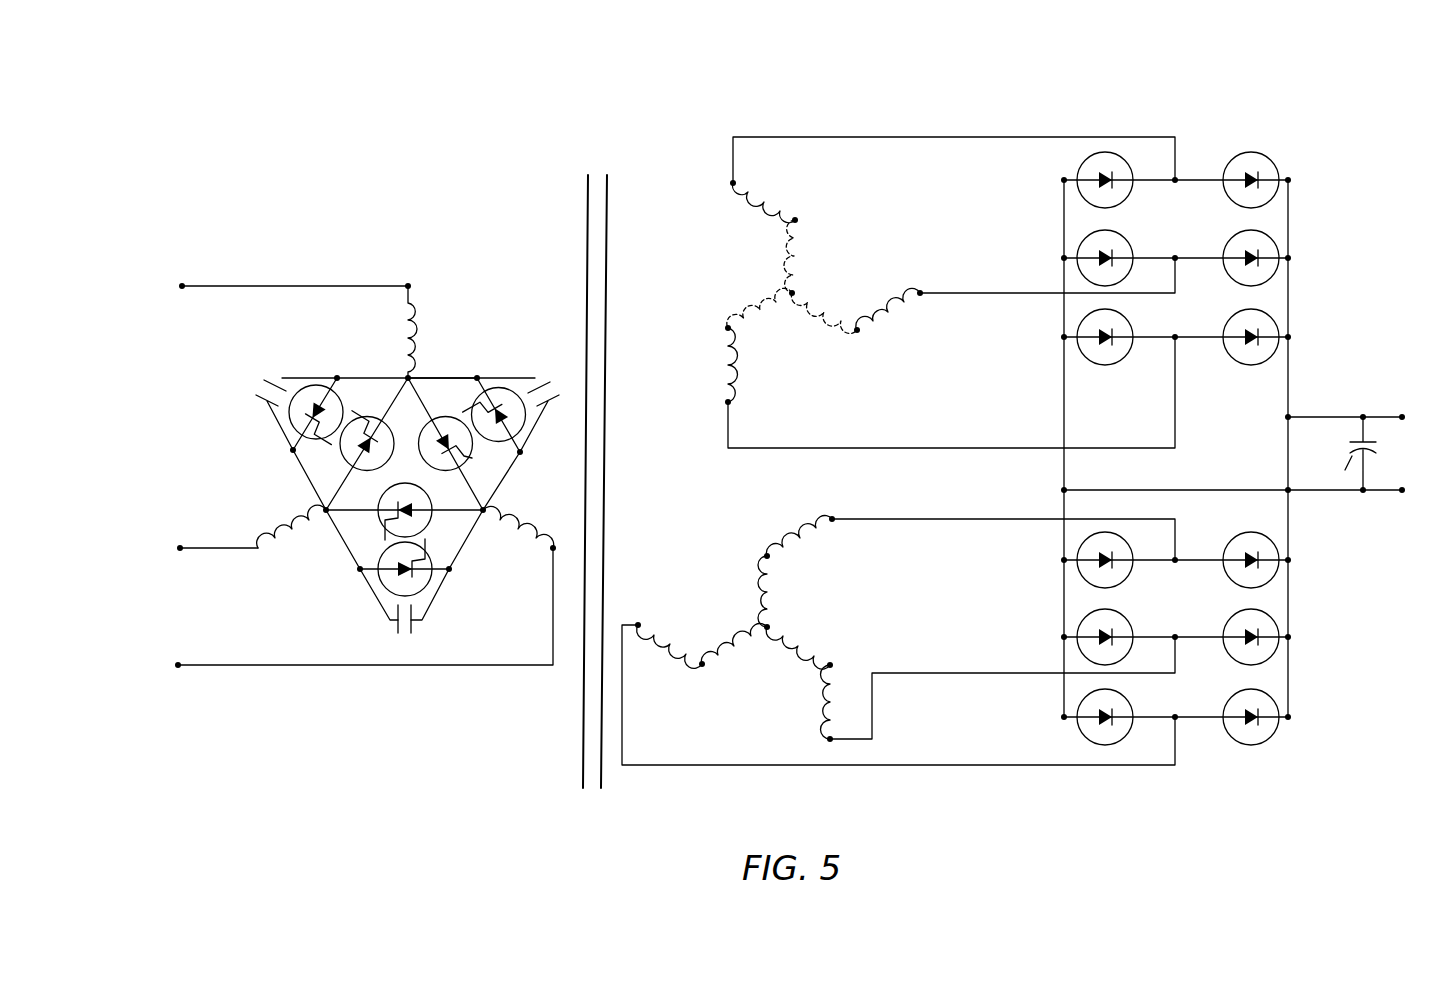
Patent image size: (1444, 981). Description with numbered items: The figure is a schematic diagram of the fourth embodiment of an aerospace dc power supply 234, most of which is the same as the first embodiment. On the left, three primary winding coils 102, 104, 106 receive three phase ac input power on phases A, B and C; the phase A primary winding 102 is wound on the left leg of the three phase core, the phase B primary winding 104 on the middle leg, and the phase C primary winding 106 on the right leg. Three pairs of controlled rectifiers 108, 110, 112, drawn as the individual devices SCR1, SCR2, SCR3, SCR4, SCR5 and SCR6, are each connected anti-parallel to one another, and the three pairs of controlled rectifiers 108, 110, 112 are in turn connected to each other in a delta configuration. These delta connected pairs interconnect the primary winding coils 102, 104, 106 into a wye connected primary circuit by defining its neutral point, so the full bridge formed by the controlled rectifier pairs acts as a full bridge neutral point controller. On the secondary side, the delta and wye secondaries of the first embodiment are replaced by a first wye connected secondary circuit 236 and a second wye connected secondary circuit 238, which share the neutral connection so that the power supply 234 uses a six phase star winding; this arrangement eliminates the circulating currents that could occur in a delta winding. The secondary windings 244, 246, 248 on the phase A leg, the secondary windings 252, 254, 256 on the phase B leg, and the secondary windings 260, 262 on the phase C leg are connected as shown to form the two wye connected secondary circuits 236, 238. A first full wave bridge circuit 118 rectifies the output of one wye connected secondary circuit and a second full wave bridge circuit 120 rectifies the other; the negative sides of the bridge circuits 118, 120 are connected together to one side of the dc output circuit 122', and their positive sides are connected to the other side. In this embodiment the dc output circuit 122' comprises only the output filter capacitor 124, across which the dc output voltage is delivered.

The primary winding coil 102 is at (415, 325).
The primary winding coil 104 is at (520, 543).
The primary winding coil 106 is at (302, 513).
The pair of controlled rectifiers 108 is at (316, 355).
The pair of controlled rectifiers 110 is at (350, 588).
The pair of controlled rectifiers 112 is at (455, 350).
The first full wave bridge circuit 118 is at (1246, 138).
The second full wave bridge circuit 120 is at (1198, 748).
The dc output circuit 122' is at (1364, 405).
The output filter capacitor 124 is at (1362, 493).
The aerospace dc power supply 234 is at (400, 782).
The first wye connected secondary circuit 236 is at (818, 186).
The second wye connected secondary circuit 238 is at (708, 735).
The secondary winding 244 is at (818, 242).
The secondary winding 246 is at (737, 362).
The secondary winding 248 is at (840, 677).
The secondary winding 252 is at (825, 343).
The secondary winding 254 is at (783, 212).
The secondary winding 256 is at (670, 667).
The secondary winding 260 is at (760, 300).
The secondary winding 262 is at (888, 307).
The silicon controlled rectifier SCR1 is at (350, 462).
The silicon controlled rectifier SCR2 is at (330, 447).
The silicon controlled rectifier SCR3 is at (378, 523).
The silicon controlled rectifier SCR4 is at (432, 585).
The silicon controlled rectifier SCR5 is at (447, 417).
The silicon controlled rectifier SCR6 is at (527, 433).